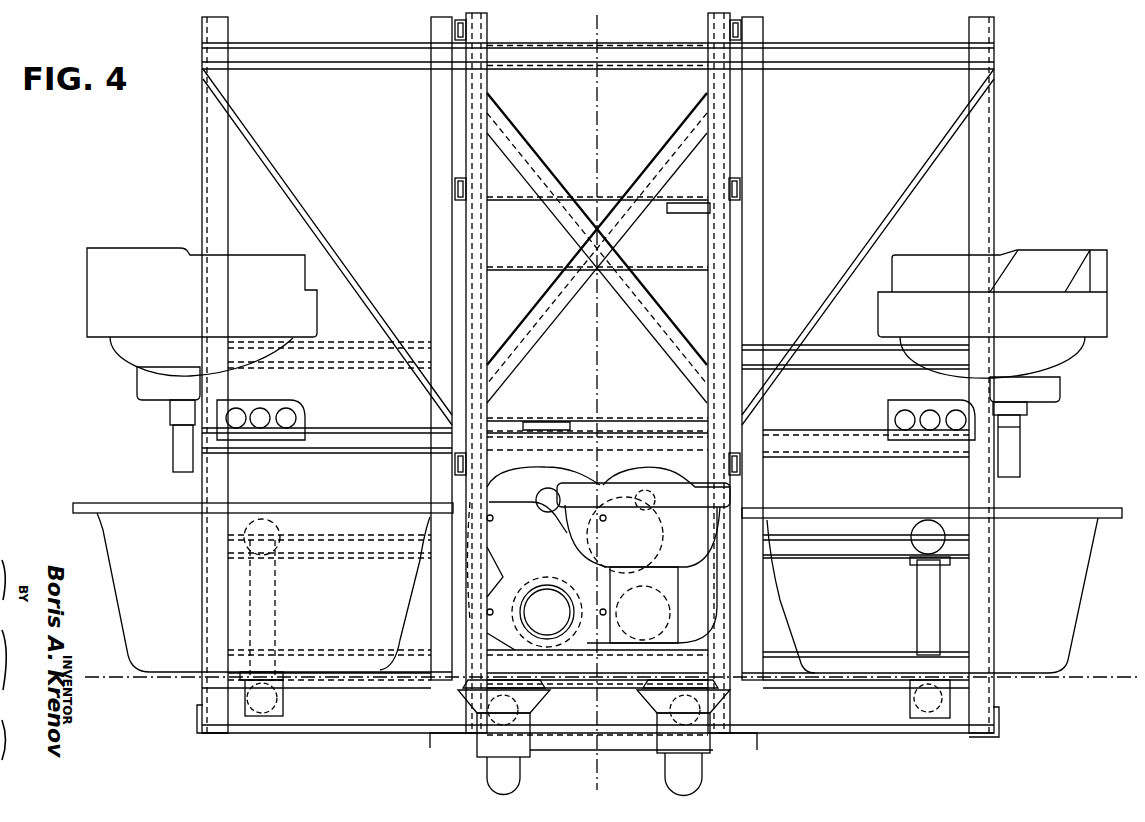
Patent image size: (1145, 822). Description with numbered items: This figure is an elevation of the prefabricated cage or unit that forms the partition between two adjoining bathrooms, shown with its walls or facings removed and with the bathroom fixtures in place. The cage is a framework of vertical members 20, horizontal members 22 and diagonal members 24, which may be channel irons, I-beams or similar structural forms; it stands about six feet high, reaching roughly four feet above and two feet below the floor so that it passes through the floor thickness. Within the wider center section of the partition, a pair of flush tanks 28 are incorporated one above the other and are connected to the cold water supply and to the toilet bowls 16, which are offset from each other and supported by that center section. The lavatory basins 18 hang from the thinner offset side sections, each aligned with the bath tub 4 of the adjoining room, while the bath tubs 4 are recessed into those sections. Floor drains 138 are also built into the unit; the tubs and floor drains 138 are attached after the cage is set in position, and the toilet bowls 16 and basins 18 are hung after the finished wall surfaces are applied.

The bath tub 4 is at (142, 512).
The toilet bowl 16 is at (589, 484).
The lavatory basin 18 is at (90, 290).
The vertical member 20 is at (215, 172).
The horizontal member 22 is at (313, 62).
The diagonal member 24 is at (310, 218).
The flush tank 28 is at (528, 197).
The floor drain 138 is at (487, 777).